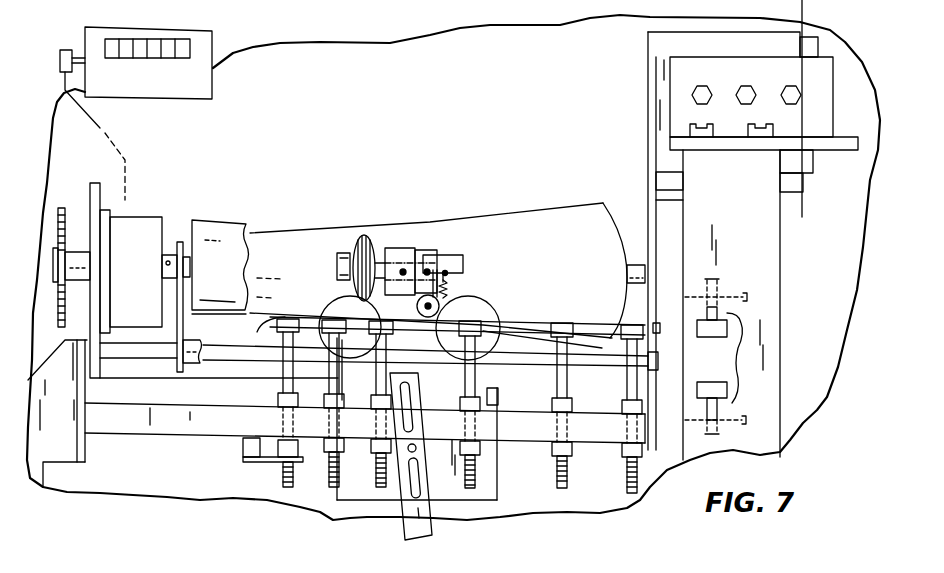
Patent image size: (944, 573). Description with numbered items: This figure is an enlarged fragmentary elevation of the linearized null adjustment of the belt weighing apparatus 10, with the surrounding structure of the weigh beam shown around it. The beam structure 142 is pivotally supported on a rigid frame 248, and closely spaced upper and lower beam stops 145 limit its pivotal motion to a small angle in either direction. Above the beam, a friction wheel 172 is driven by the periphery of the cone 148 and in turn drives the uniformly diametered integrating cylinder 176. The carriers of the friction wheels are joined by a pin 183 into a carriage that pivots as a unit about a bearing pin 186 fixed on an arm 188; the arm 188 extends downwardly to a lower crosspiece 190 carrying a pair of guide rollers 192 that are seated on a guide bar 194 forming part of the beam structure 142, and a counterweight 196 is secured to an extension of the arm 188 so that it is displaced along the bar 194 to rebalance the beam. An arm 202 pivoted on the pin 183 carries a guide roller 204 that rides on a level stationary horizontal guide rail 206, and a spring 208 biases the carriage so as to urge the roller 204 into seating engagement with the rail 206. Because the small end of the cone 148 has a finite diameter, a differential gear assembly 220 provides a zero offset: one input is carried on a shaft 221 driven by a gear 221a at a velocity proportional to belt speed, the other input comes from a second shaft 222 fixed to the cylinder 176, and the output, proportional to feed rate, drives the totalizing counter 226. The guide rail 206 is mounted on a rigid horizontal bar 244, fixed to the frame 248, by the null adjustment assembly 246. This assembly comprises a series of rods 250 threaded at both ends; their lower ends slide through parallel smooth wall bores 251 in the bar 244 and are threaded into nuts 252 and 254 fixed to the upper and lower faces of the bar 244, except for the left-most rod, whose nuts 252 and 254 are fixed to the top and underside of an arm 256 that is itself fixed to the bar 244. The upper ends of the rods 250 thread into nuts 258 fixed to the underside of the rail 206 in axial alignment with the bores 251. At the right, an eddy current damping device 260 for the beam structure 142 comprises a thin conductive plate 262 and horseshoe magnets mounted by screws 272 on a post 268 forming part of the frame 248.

The apparatus 10 is at (770, 13).
The beam structure 142 is at (654, 183).
The beam stops 145 is at (745, 328).
The cone 148 is at (337, 224).
The friction wheel 172 is at (371, 242).
The integrating cylinder 176 is at (231, 222).
The pin 183 is at (410, 270).
The bearing pin 186 is at (433, 272).
The arm 188 is at (437, 267).
The lower crosspiece 190 is at (423, 330).
The guide rollers 192 is at (319, 345).
The guide bar 194 is at (230, 354).
The counterweight 196 is at (453, 497).
The arm 202 is at (463, 264).
The guide roller 204 is at (445, 275).
The guide rail 206 is at (542, 323).
The spring 208 is at (448, 289).
The differential gear assembly 220 is at (132, 212).
The shaft 221 is at (78, 283).
The gear 221a is at (60, 216).
The second shaft 222 is at (184, 220).
The totalizing counter 226 is at (212, 85).
The bar 244 is at (133, 437).
The null adjustment assembly 246 is at (277, 385).
The frame 248 is at (436, 261).
The rods 250 is at (333, 493).
The bores 251 is at (283, 423).
The nuts 252 is at (280, 445).
The nuts 254 is at (280, 470).
The arm 256 is at (273, 460).
The nuts 258 is at (300, 316).
The eddy current damping device 260 is at (645, 60).
The plate 262 is at (648, 98).
The post 268 is at (783, 133).
The screws 272 is at (714, 89).